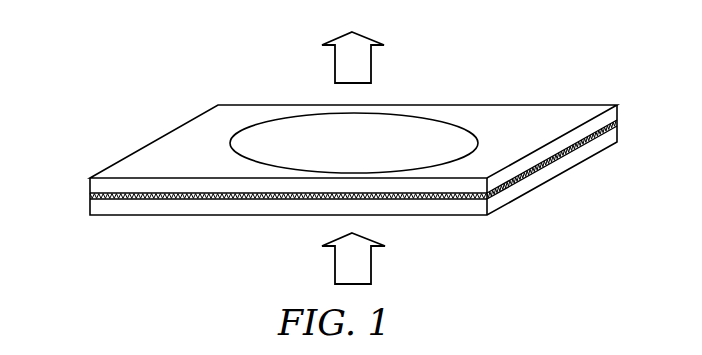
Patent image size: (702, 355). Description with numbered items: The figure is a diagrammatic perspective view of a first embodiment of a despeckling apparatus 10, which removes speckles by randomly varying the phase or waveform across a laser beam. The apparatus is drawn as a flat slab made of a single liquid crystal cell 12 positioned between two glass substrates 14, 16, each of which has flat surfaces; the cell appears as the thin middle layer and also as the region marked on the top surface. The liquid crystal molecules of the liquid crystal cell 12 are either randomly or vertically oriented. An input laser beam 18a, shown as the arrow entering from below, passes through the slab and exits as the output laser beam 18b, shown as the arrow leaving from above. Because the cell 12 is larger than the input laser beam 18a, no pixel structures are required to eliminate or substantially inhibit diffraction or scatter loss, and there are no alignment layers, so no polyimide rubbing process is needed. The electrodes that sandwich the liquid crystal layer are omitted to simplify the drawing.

The despeckling apparatus 10 is at (549, 44).
The liquid crystal cell 12 is at (345, 151).
The glass substrate 14 is at (191, 157).
The glass substrate 16 is at (153, 216).
The input laser beam 18a is at (371, 268).
The output laser beam 18b is at (371, 63).